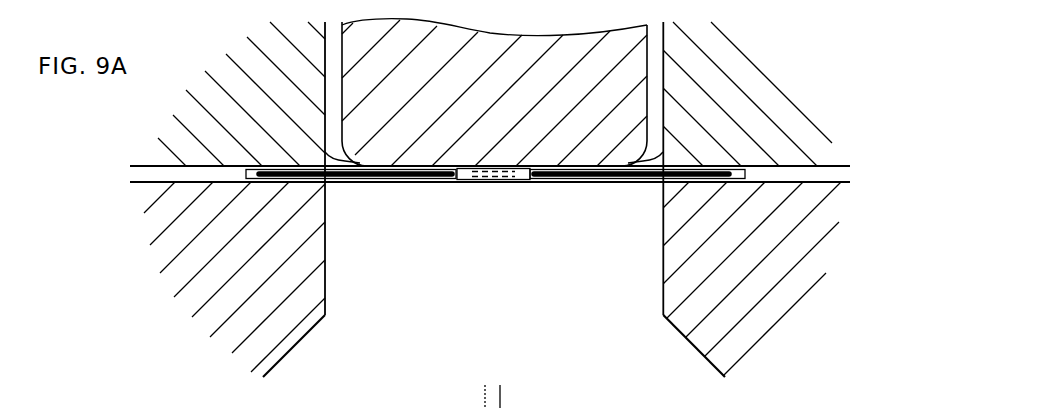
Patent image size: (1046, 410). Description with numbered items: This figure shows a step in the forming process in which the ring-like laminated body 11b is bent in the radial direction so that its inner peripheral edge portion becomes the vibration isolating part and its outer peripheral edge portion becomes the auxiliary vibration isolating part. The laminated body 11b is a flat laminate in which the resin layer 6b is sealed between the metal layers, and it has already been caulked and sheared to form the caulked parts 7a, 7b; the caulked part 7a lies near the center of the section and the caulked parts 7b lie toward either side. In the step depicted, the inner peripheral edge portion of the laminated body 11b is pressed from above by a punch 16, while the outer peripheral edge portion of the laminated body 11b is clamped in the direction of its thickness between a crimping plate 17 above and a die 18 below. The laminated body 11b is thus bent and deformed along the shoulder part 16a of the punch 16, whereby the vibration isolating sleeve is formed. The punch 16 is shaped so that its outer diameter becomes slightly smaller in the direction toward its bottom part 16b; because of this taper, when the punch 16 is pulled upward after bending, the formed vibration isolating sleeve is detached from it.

The punch 16 is at (494, 85).
The shoulder part 16a is at (325, 152).
The bottom part 16b is at (427, 166).
The crimping plate 17 is at (775, 97).
The die 18 is at (762, 310).
The resin layer 6b is at (600, 184).
The caulked part 7a is at (467, 193).
The caulked part 7b is at (257, 191).
The laminated body 11b is at (403, 190).